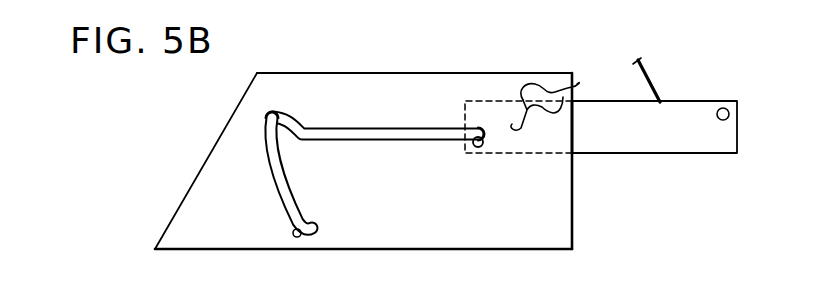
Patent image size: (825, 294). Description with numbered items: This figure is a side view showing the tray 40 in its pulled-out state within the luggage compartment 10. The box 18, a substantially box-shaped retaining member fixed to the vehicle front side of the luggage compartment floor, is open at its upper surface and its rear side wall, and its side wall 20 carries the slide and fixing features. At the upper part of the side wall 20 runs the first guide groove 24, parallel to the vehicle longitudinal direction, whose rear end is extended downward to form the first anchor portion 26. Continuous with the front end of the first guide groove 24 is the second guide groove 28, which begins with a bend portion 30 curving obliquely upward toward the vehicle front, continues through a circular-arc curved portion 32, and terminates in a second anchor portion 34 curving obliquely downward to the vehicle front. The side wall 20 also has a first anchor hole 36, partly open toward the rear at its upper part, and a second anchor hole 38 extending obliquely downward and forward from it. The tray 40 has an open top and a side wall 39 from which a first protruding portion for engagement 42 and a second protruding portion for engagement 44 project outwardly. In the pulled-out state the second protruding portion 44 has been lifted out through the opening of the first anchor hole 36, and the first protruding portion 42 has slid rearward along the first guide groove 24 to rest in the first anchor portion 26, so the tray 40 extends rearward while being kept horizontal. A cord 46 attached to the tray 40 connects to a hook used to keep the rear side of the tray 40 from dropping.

The luggage compartment 10 is at (552, 46).
The box 18 is at (399, 69).
The side wall 20 is at (218, 162).
The first guide groove 24 is at (386, 137).
The first anchor portion 26 is at (478, 150).
The second guide groove 28 is at (264, 176).
The bend portion 30 is at (272, 112).
The curved portion 32 is at (284, 191).
The second anchor portion 34 is at (296, 238).
The first anchor hole 36 is at (577, 84).
The second anchor hole 38 is at (523, 100).
The side wall 39 is at (612, 103).
The tray 40 is at (703, 92).
The first protruding portion for engagement 42 is at (487, 146).
The second protruding portion for engagement 44 is at (717, 118).
The cord 46 is at (652, 74).